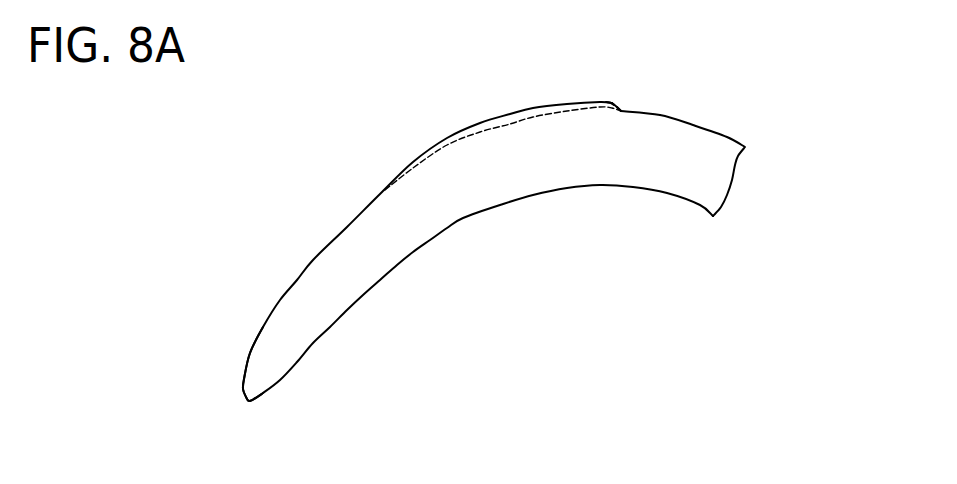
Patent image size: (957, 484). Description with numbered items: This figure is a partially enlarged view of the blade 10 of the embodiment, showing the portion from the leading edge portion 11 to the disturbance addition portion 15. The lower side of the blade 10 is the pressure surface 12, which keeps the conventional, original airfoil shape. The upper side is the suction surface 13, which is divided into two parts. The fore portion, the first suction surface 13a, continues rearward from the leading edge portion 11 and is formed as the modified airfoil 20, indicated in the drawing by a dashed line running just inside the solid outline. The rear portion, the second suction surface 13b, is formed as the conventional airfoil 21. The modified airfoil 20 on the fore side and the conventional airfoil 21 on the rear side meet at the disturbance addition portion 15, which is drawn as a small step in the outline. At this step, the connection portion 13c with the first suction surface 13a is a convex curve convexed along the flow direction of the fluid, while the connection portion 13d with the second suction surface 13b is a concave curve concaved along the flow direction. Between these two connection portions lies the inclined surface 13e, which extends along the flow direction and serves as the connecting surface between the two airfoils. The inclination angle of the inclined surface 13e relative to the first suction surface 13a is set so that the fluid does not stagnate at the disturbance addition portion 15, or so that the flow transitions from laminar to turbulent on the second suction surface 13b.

The blade 10 is at (822, 67).
The leading edge portion 11 is at (248, 402).
The pressure surface 12 is at (459, 229).
The suction surface 13 is at (316, 259).
The first suction surface 13a is at (503, 116).
The modified airfoil 20 is at (508, 115).
The second suction surface 13b is at (771, 161).
The conventional airfoil 21 is at (723, 135).
The connection portion 13c is at (612, 104).
The connection portion 13d is at (621, 111).
The inclined surface 13e is at (622, 106).
The disturbance addition portion 15 is at (635, 89).